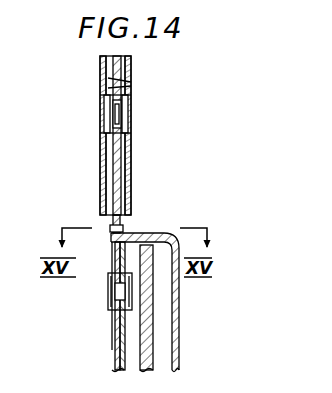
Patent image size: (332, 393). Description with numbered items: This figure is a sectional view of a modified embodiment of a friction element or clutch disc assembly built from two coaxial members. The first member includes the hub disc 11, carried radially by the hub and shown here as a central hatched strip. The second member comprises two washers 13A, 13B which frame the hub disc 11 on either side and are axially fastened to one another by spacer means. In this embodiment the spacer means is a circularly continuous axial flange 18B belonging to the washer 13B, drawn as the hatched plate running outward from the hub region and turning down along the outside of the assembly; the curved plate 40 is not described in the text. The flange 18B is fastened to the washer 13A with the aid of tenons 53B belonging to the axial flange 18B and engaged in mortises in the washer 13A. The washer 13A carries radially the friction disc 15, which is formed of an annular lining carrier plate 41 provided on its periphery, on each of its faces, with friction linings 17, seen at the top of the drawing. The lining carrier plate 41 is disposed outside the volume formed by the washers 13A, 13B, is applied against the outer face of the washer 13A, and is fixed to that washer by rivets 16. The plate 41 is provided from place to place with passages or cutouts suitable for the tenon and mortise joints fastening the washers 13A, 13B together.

The hub disc 11 is at (156, 318).
The washer 13A is at (118, 356).
The washer 13B is at (182, 339).
The friction disc 15 is at (98, 135).
The rivets 16 is at (108, 298).
The friction linings 17 is at (122, 83).
The circularly continuous axial flange 18B is at (146, 233).
The curved plate 40 is at (163, 273).
The lining carrier plate 41 is at (113, 329).
The tenons 53B is at (112, 234).